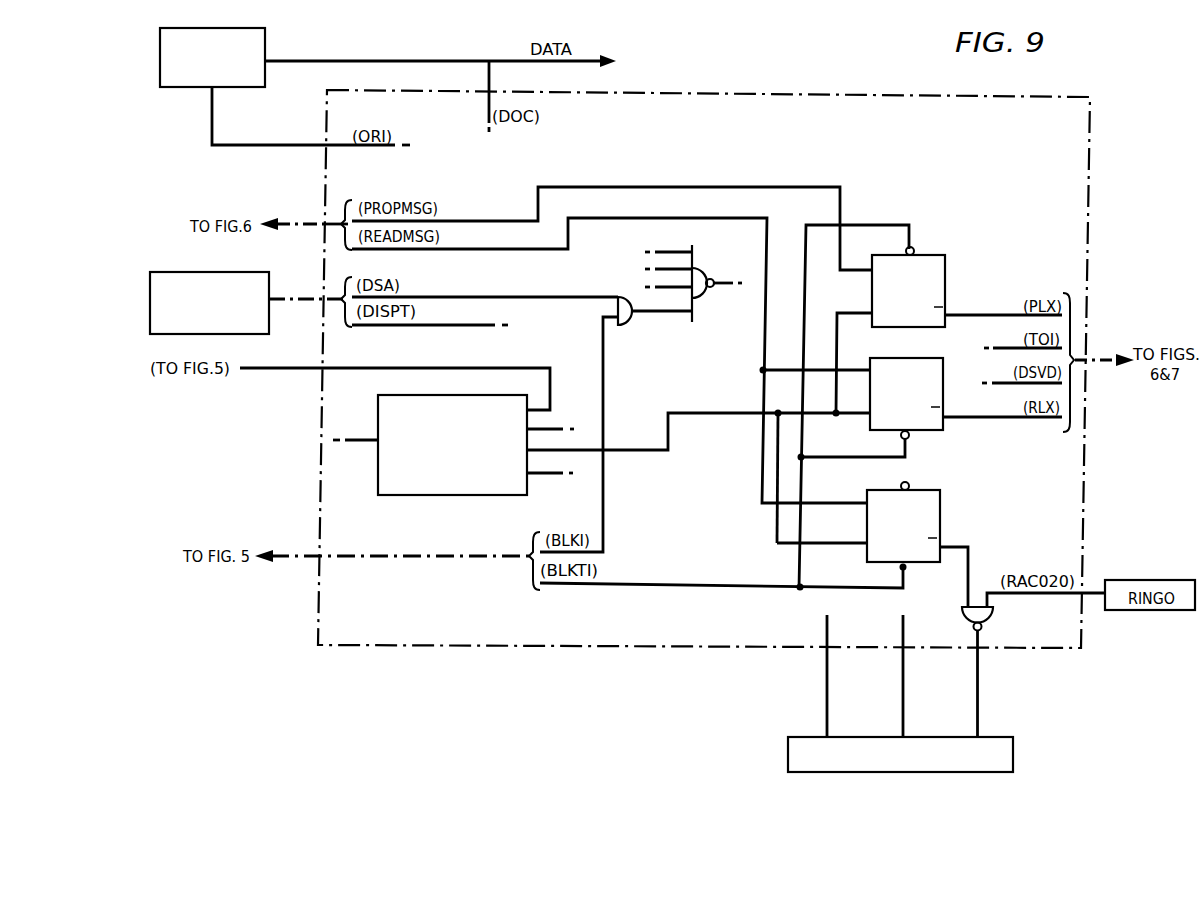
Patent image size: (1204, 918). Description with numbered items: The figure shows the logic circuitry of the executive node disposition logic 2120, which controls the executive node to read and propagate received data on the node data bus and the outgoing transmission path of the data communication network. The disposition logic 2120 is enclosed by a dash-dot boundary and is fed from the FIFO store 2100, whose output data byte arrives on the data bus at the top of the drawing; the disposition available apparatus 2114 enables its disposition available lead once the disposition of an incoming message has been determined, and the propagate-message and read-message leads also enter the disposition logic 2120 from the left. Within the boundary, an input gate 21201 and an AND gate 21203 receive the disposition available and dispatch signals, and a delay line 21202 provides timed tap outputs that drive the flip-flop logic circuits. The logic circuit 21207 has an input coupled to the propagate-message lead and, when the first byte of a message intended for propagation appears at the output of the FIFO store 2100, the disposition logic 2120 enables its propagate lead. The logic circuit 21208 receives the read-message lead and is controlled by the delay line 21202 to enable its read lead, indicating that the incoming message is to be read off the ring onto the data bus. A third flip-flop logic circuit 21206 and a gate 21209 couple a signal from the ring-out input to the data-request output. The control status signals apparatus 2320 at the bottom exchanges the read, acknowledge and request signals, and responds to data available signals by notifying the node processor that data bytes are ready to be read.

The FIFO store 2100 is at (193, 90).
The disposition logic 2120 is at (766, 88).
The disposition available apparatus 2114 is at (245, 272).
The NAND gate 21201 is at (698, 283).
The AND gate 21203 is at (616, 424).
The delay line 21202 is at (395, 495).
The logic circuit 21207 is at (945, 268).
The logic circuit 21208 is at (933, 432).
The flip-flop 21206 is at (940, 520).
The NAND gate 21209 is at (1008, 671).
The control status signals apparatus 2320 is at (788, 752).